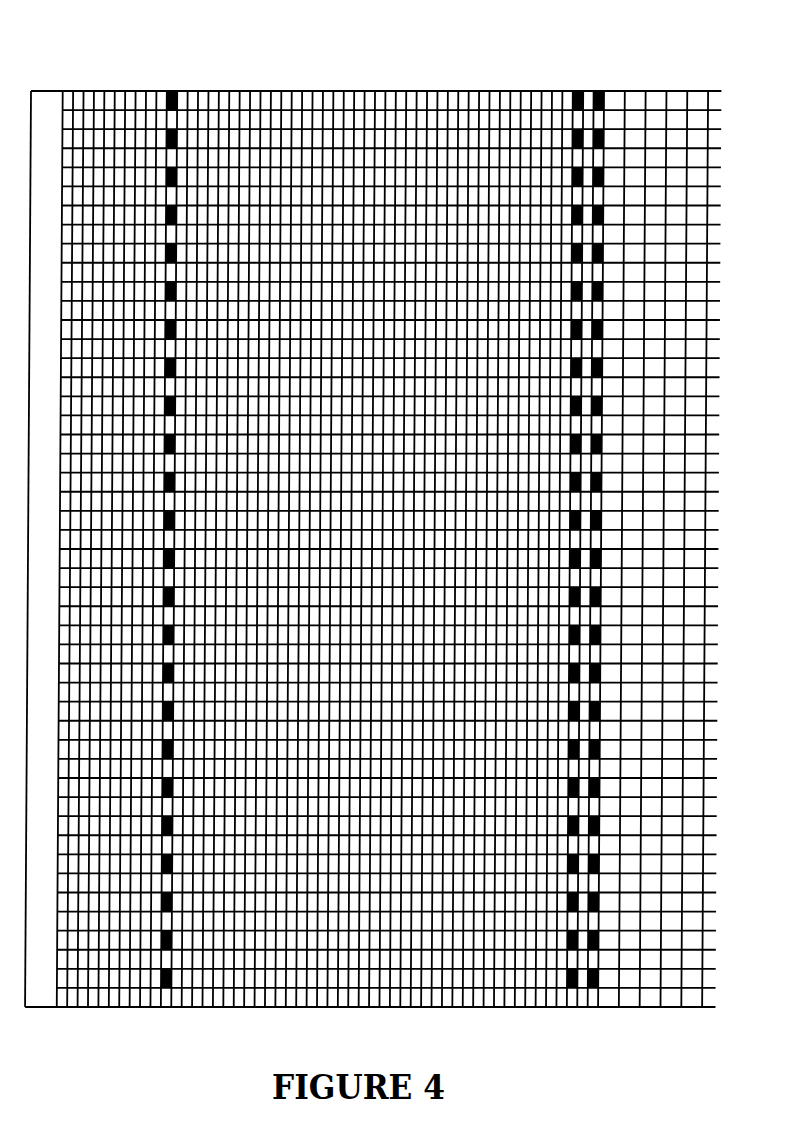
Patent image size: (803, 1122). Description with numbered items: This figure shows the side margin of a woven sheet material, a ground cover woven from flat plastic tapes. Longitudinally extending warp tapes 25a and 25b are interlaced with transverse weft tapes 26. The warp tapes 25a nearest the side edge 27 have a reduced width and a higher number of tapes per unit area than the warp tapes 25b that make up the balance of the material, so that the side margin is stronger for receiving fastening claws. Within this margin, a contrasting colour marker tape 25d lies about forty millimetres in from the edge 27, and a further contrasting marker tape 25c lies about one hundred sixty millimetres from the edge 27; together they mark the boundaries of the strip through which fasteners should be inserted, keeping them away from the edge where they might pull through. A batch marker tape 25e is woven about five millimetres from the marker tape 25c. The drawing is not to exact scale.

The warp tapes 25a is at (288, 97).
The warp tapes 25b is at (692, 96).
The marker tape 25c is at (578, 93).
The marker tape 25d is at (173, 93).
The batch marker tape 25e is at (600, 93).
The weft tapes 26 is at (715, 240).
The side edge 27 is at (42, 97).